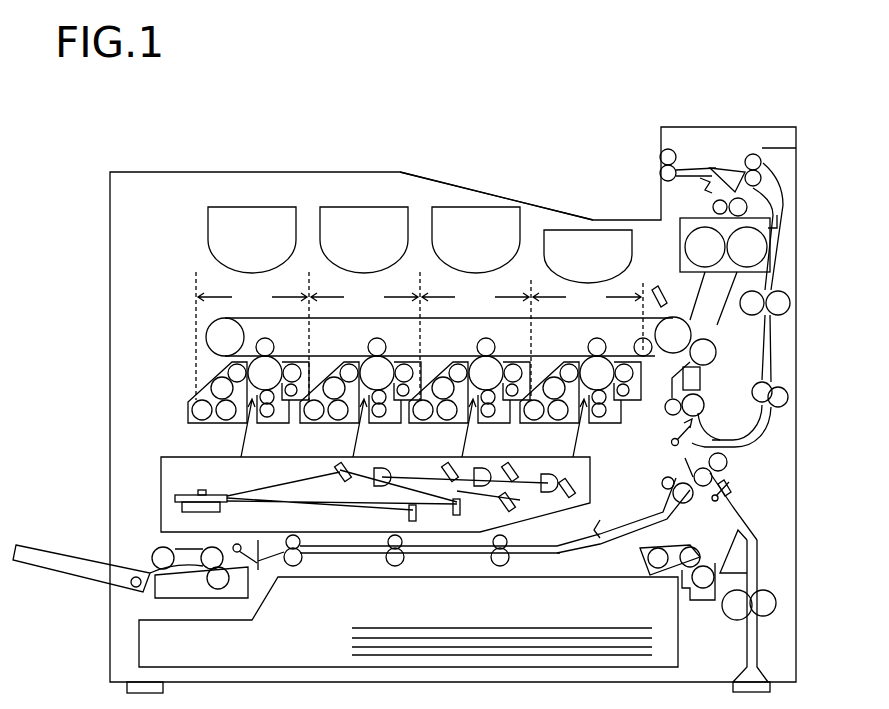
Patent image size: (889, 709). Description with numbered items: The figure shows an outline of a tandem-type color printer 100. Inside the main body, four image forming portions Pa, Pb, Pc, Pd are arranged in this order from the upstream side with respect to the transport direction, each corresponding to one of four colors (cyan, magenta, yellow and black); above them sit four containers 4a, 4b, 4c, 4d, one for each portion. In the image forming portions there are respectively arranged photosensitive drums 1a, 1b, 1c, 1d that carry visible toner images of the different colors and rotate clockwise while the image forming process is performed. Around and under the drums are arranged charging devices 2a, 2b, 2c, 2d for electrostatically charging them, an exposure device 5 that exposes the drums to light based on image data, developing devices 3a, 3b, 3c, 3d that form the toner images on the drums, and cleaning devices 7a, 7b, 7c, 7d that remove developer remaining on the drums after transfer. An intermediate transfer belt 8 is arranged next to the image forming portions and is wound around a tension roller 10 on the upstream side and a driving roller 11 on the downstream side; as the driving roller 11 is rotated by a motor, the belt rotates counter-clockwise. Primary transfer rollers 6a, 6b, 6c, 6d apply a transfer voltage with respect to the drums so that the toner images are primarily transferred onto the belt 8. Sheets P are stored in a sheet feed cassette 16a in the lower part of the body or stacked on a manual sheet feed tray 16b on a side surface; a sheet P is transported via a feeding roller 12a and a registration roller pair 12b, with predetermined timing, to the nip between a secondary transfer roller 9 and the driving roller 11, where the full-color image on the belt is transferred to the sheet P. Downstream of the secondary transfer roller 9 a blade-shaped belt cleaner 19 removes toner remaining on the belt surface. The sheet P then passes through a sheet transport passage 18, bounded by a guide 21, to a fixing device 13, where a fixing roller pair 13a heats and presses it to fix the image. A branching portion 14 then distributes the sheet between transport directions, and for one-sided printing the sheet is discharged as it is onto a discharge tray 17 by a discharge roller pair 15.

The color printer 100 is at (277, 152).
The discharge tray 17 is at (495, 194).
The toner container 4a is at (252, 240).
The toner container 4b is at (364, 240).
The toner container 4c is at (476, 240).
The toner container 4d is at (588, 256).
The image forming portion Pa is at (251, 336).
The image forming portion Pb is at (363, 336).
The image forming portion Pc is at (474, 336).
The image forming portion Pd is at (587, 340).
The intermediate transfer belt 8 is at (250, 316).
The tension roller 10 is at (218, 337).
The driving roller 11 is at (676, 318).
The belt cleaner 19 is at (653, 288).
The developing device 3a is at (188, 405).
The developing device 3b is at (345, 366).
The developing device 3c is at (444, 366).
The developing device 3d is at (555, 366).
The photosensitive drum 1a is at (265, 373).
The photosensitive drum 1b is at (377, 373).
The photosensitive drum 1c is at (486, 373).
The photosensitive drum 1d is at (597, 373).
The primary transfer roller 6a is at (272, 344).
The primary transfer roller 6b is at (384, 344).
The primary transfer roller 6c is at (493, 344).
The primary transfer roller 6d is at (604, 344).
The charging device 2a is at (270, 423).
The charging device 2b is at (382, 423).
The charging device 2c is at (491, 423).
The charging device 2d is at (602, 423).
The cleaning device 7a is at (295, 382).
The cleaning device 7b is at (407, 382).
The cleaning device 7c is at (516, 382).
The cleaning device 7d is at (681, 427).
The exposure device 5 is at (177, 456).
The fixing device 13 is at (777, 232).
The fixing roller pair 13a is at (753, 248).
The discharge roller pair 15 is at (658, 160).
The branching portion 14 is at (761, 160).
The conveyance guide 21 is at (796, 226).
The sheet transport passage 18 is at (714, 321).
The secondary transfer roller 9 is at (707, 366).
The registration roller pair 12b is at (664, 482).
The feeding roller 12a is at (205, 548).
The manual sheet feed tray 16b is at (74, 560).
The sheet feed cassette 16a is at (139, 640).
The sheet P is at (430, 628).